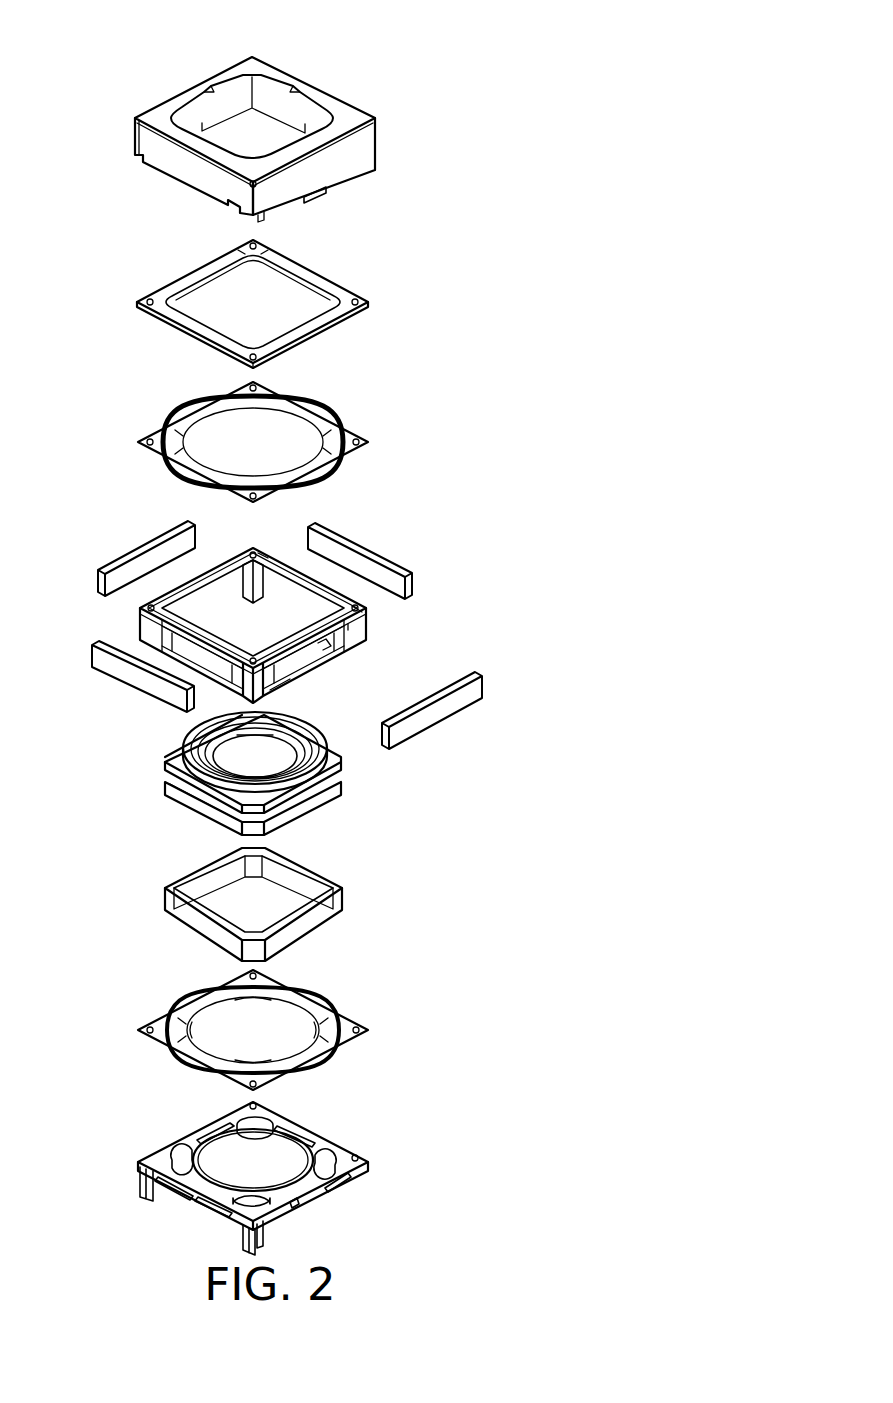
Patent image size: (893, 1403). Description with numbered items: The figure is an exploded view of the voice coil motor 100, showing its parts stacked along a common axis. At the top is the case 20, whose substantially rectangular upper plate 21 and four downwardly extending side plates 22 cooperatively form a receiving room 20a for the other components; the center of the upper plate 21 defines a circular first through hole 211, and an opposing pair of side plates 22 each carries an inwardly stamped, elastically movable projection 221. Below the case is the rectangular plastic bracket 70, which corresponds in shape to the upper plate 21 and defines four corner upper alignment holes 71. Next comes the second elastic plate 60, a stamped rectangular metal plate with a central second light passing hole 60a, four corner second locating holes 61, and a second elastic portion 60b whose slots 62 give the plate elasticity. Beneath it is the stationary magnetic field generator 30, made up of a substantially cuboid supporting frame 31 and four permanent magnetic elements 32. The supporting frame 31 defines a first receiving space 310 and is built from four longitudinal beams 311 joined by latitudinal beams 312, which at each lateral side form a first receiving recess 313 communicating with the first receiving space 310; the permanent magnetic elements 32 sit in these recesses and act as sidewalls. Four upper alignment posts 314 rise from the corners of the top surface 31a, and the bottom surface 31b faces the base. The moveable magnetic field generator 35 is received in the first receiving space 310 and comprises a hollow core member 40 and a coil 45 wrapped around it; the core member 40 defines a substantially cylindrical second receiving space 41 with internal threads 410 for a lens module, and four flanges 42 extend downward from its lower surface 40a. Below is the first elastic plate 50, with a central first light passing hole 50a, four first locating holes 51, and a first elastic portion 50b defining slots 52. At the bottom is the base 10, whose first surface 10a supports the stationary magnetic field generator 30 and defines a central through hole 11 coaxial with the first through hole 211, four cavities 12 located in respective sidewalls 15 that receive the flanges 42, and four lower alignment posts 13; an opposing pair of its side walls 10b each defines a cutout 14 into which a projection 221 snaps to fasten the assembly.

The voice coil motor 100 is at (277, 41).
The case 20 is at (275, 151).
The receiving room 20a is at (218, 110).
The upper plate 21 is at (347, 113).
The side plates 22 is at (192, 182).
The first through hole 211 is at (293, 90).
The projection 221 is at (312, 200).
The bracket 70 is at (293, 311).
The upper alignment holes 71 is at (360, 295).
The second elastic plate 60 is at (260, 444).
The second locating holes 61 is at (355, 433).
The slots 62 is at (353, 447).
The second light passing hole 60a is at (213, 427).
The second elastic portion 60b is at (175, 438).
The stationary magnetic field generator 30 is at (307, 618).
The supporting frame 31 is at (280, 612).
The permanent magnetic elements 32 is at (397, 560).
The first receiving space 310 is at (210, 627).
The longitudinal beams 311 is at (268, 693).
The latitudinal beams 312 is at (360, 643).
The first receiving recess 313 is at (323, 645).
The upper alignment posts 314 is at (253, 548).
The top surface 31a is at (263, 557).
The bottom surface 31b is at (293, 685).
The moveable magnetic field generator 35 is at (301, 843).
The core member 40 is at (266, 793).
The second receiving space 41 is at (183, 748).
The internal threads 410 is at (205, 743).
The flanges 42 is at (295, 822).
The lower surface 40a is at (187, 812).
The coil 45 is at (455, 840).
The first elastic plate 50 is at (255, 1034).
The first locating holes 51 is at (360, 1023).
The slots 52 is at (357, 1042).
The first light passing hole 50a is at (220, 1010).
The first elastic portion 50b is at (170, 1017).
The base 10 is at (278, 1168).
The first surface 10a is at (333, 1148).
The side walls 10b is at (273, 1223).
The through hole 11 is at (287, 1153).
The cavities 12 is at (212, 1138).
The lower alignment posts 13 is at (355, 1160).
The cutout 14 is at (323, 1193).
The sidewall 15 is at (238, 1113).